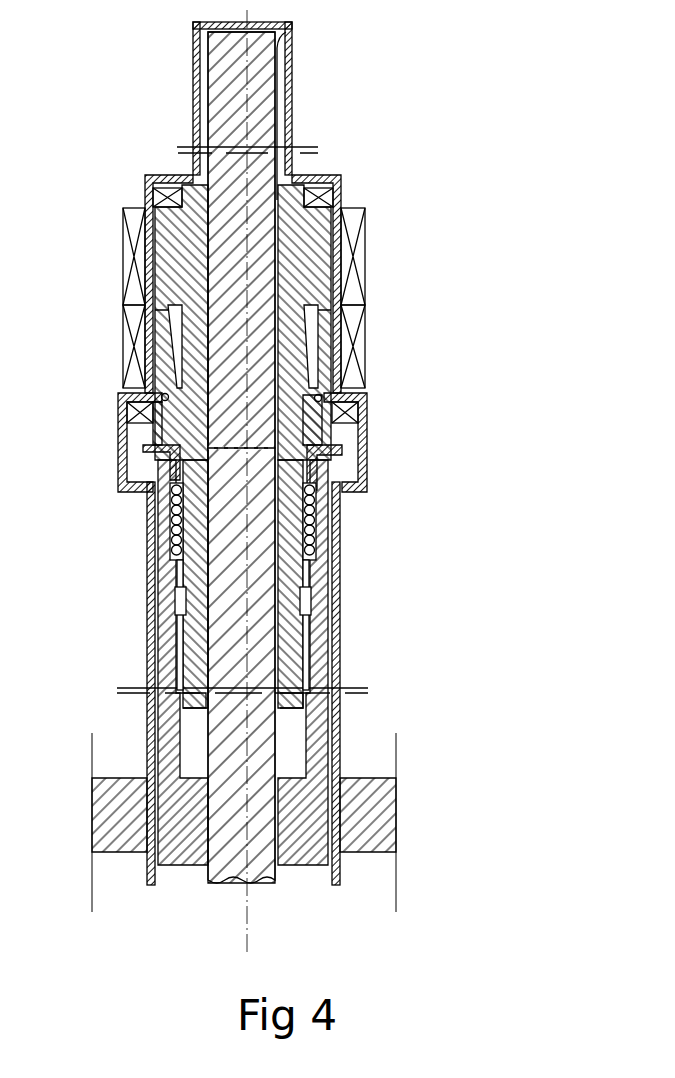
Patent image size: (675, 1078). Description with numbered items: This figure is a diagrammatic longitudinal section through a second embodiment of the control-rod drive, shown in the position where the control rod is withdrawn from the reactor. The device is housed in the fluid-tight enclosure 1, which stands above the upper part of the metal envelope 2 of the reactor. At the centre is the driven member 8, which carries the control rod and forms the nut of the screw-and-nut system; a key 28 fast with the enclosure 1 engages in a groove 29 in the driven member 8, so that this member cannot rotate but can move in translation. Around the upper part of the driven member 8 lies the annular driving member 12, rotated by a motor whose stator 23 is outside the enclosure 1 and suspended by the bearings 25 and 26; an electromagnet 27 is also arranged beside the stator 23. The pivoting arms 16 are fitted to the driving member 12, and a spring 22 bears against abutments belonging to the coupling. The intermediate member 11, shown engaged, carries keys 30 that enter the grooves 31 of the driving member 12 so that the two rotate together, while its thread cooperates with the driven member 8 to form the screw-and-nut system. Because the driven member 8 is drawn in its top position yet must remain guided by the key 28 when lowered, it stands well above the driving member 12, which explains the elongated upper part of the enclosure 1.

The enclosure 1 is at (288, 57).
The metal envelope 2 is at (372, 840).
The driven member 8 is at (265, 615).
The intermediate member 11 is at (170, 568).
The driving member 12 is at (312, 250).
The arms 16 is at (323, 360).
The spring 22 is at (311, 527).
The stator 23 is at (128, 265).
The bearing 25 is at (158, 202).
The bearing 26 is at (127, 432).
The electromagnet 27 is at (125, 350).
The key 28 is at (296, 167).
The groove 29 is at (273, 118).
The keys 30 is at (180, 602).
The grooves 31 is at (188, 658).